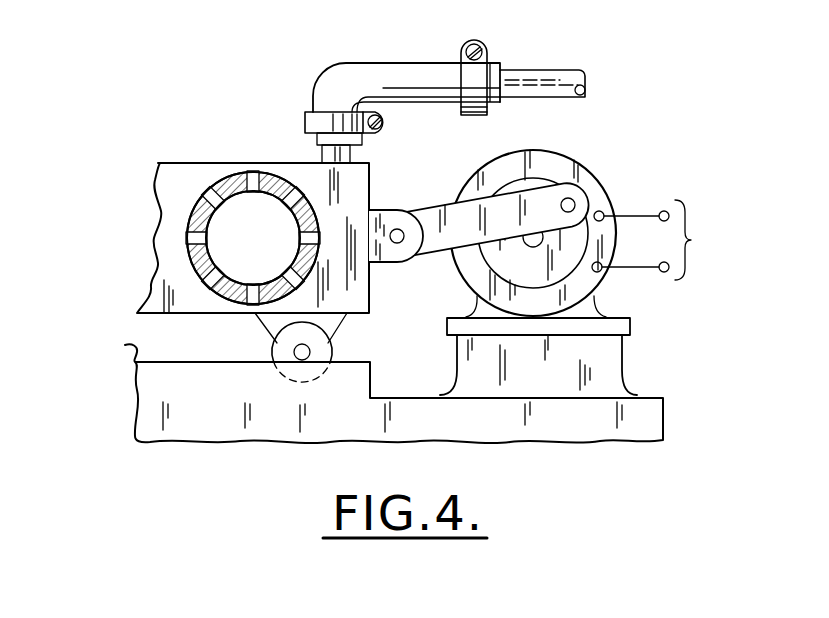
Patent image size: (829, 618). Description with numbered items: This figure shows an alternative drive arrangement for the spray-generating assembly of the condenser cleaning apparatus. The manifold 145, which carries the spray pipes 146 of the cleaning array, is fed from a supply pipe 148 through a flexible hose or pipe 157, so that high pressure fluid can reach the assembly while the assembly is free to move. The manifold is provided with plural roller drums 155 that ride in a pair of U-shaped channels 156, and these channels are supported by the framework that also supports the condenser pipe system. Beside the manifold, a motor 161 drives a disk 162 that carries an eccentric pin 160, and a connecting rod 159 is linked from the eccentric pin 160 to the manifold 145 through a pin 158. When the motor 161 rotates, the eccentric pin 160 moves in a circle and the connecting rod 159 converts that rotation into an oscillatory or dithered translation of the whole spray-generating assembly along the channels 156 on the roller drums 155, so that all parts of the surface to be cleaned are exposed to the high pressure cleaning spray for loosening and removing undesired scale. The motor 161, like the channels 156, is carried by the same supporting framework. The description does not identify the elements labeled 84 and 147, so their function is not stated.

The electrical leads 84 is at (657, 240).
The manifold 145 is at (170, 180).
The pipe 146 is at (238, 163).
The bearing pads 147 is at (185, 247).
The pipe 148 is at (547, 70).
The roller drum 155 is at (285, 350).
The U-shaped channel 156 is at (137, 350).
The flexible hose or pipe 157 is at (388, 62).
The pin 158 is at (403, 210).
The connecting rod 159 is at (440, 208).
The eccentric pin 160 is at (598, 178).
The motor 161 is at (600, 283).
The disk 162 is at (497, 265).